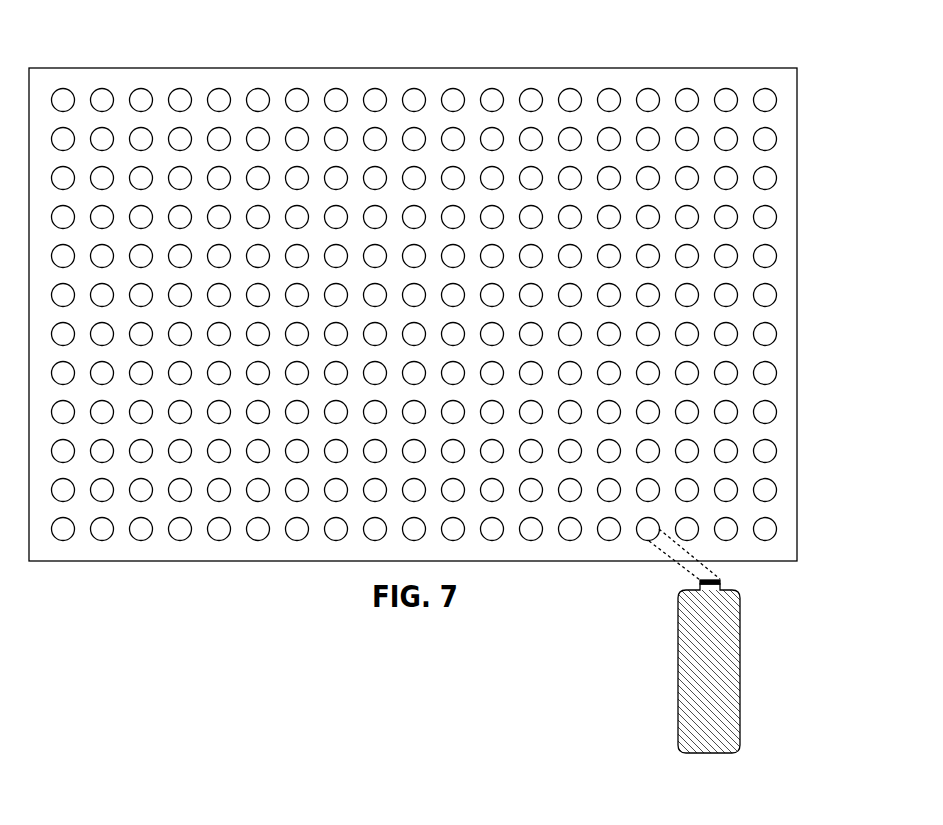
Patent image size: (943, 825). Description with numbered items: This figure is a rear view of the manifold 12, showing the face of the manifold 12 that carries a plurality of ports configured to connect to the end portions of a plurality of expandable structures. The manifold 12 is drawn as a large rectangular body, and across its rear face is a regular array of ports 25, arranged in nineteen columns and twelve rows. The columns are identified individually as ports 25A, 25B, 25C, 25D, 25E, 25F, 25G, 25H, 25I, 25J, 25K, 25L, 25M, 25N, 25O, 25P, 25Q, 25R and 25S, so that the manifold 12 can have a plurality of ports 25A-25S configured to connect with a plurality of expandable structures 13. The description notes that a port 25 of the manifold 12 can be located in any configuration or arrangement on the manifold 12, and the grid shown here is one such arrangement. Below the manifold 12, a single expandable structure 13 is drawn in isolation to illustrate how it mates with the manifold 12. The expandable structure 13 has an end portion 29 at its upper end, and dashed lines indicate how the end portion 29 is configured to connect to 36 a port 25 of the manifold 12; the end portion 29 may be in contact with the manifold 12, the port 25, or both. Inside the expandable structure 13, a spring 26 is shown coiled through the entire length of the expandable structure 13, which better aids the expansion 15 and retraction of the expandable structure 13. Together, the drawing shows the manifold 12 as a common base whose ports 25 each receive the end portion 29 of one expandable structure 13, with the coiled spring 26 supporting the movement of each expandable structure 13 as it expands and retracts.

The manifold 12 is at (783, 82).
The port 25 is at (444, 316).
The port 25A is at (58, 88).
The port 25B is at (97, 88).
The port 25C is at (136, 88).
The port 25D is at (175, 88).
The port 25E is at (214, 88).
The port 25F is at (253, 88).
The port 25G is at (292, 88).
The port 25H is at (331, 88).
The port 25I is at (370, 88).
The port 25J is at (409, 88).
The port 25K is at (448, 88).
The port 25L is at (487, 88).
The port 25M is at (526, 88).
The port 25N is at (565, 88).
The port 25O is at (604, 88).
The port 25P is at (643, 88).
The port 25Q is at (682, 88).
The port 25R is at (721, 88).
The port 25S is at (760, 88).
The connection 36 is at (680, 567).
The expandable structure 13 is at (740, 615).
The end portion 29 is at (708, 592).
The spring 26 is at (708, 642).
The expansion 15 is at (713, 675).